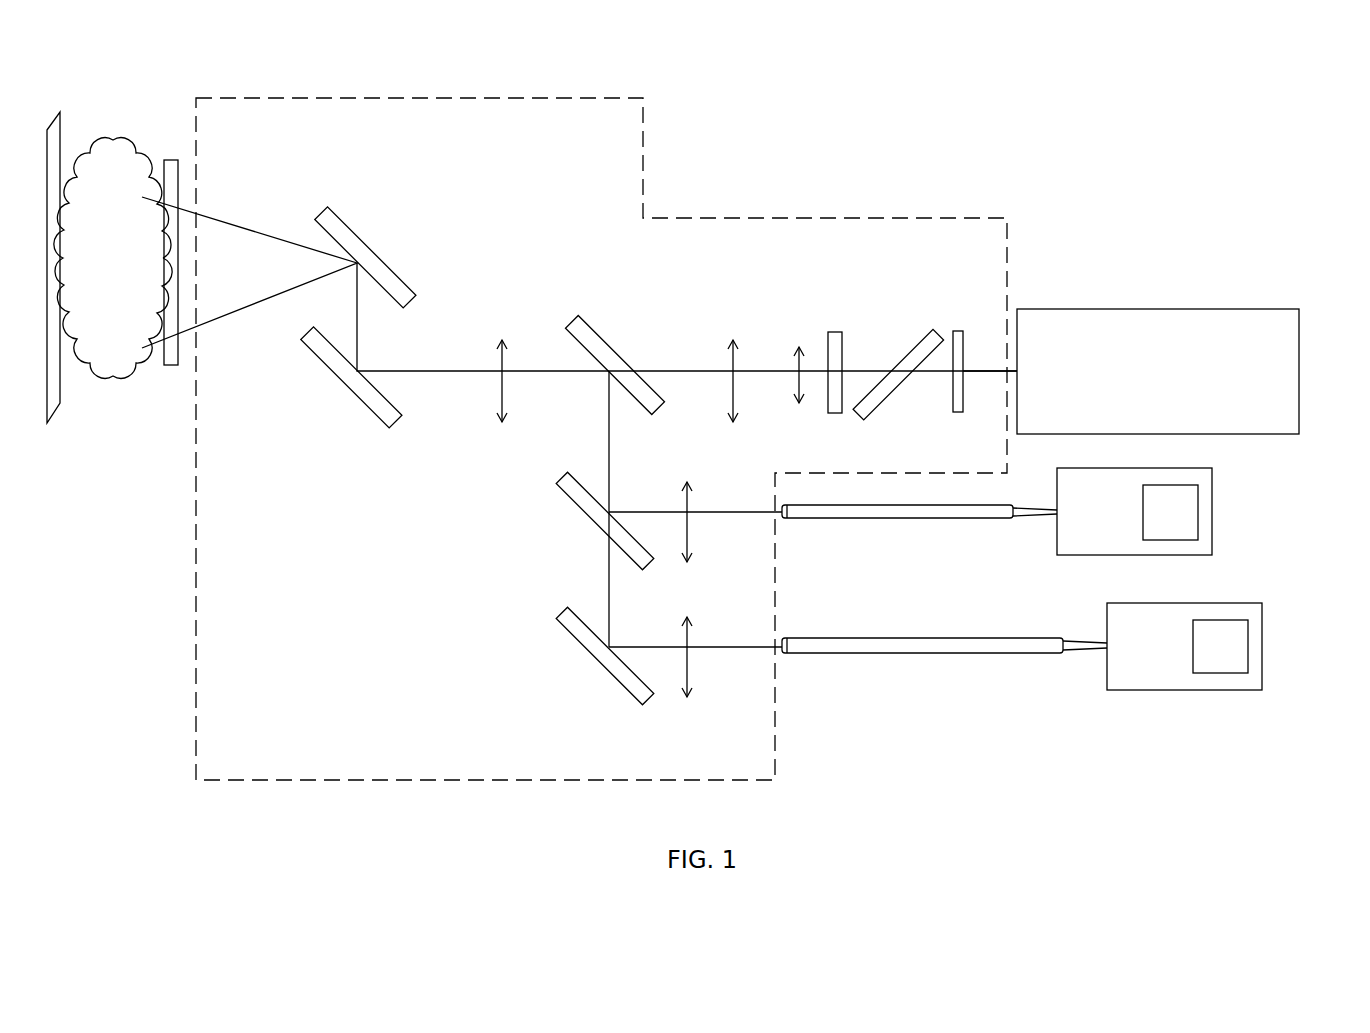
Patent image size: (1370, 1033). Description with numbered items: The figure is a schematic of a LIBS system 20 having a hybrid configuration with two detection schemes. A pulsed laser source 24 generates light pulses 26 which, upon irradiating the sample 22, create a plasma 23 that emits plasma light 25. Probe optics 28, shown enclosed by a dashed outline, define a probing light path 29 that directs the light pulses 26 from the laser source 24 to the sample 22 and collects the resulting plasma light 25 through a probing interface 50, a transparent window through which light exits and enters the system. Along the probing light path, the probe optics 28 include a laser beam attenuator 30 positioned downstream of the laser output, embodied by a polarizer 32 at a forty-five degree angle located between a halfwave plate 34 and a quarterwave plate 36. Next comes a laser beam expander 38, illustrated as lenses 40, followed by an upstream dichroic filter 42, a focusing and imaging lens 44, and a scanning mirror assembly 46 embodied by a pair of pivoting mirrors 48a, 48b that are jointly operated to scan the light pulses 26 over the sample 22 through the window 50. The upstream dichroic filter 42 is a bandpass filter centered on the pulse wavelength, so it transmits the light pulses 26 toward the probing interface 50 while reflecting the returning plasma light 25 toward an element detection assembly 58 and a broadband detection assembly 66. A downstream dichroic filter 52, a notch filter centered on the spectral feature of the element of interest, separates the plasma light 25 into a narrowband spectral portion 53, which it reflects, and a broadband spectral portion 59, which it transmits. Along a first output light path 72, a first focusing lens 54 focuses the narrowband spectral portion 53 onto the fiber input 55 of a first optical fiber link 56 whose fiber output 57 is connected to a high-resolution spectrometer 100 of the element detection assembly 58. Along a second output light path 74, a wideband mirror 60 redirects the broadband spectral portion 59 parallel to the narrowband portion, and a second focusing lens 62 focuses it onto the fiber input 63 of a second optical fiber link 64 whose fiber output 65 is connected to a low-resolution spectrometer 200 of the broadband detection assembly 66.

The LIBS system 20 is at (893, 136).
The sample 22 is at (57, 118).
The plasma 23 is at (100, 137).
The pulsed laser source 24 is at (1159, 309).
The plasma light 25 is at (233, 222).
The light pulses 26 is at (698, 358).
The probe optics 28 is at (500, 98).
The probing light path 29 is at (987, 369).
The laser beam attenuator 30 is at (908, 371).
The polarizer 32 is at (885, 400).
The halfwave plate 34 is at (958, 414).
The quarterwave plate 36 is at (837, 413).
The laser beam expander 38 is at (768, 362).
The lenses 40 is at (797, 382).
The upstream dichroic filter 42 is at (583, 322).
The focusing and imaging lens 44 is at (505, 393).
The scanning mirror assembly 46 is at (383, 302).
The pivoting mirror 48a is at (370, 407).
The pivoting mirror 48b is at (400, 270).
The probing interface 50 is at (172, 365).
The downstream dichroic filter 52 is at (578, 508).
The narrowband spectral portion 53 is at (757, 525).
The first focusing lens 54 is at (682, 502).
The fiber input 55 is at (782, 518).
The first optical fiber link 56 is at (898, 520).
The fiber output 57 is at (1015, 518).
The element detection assembly 58 is at (1202, 468).
The broadband spectral portion 59 is at (665, 633).
The wideband mirror 60 is at (570, 637).
The second focusing lens 62 is at (690, 668).
The fiber input 63 is at (782, 653).
The second optical fiber link 64 is at (928, 658).
The fiber output 65 is at (1065, 657).
The broadband detection assembly 66 is at (1165, 690).
The first output light path 72 is at (742, 510).
The second output light path 74 is at (730, 645).
The high-resolution spectrometer 100 is at (1198, 512).
The low-resolution spectrometer 200 is at (1248, 647).